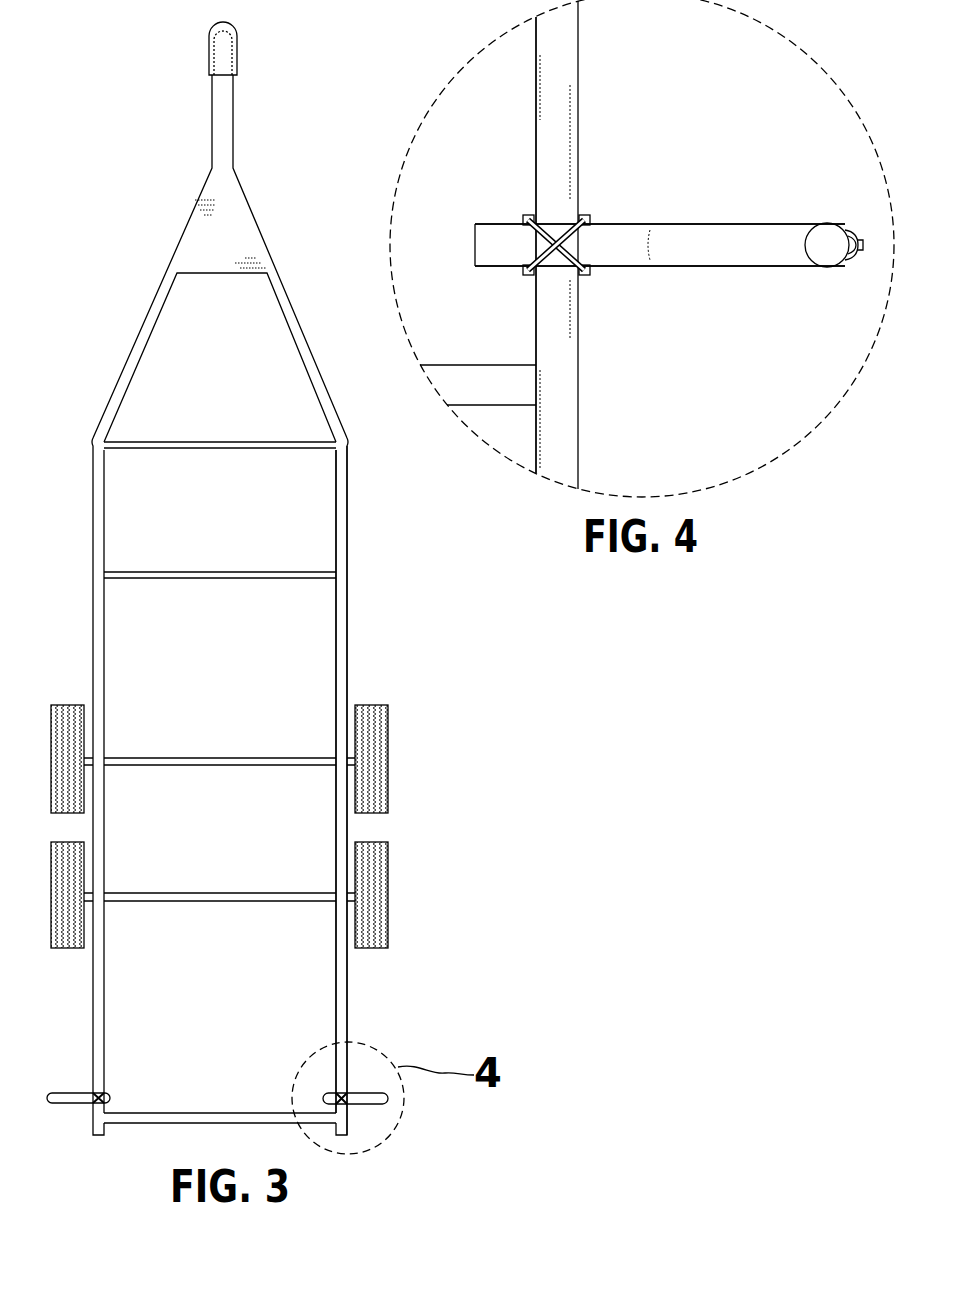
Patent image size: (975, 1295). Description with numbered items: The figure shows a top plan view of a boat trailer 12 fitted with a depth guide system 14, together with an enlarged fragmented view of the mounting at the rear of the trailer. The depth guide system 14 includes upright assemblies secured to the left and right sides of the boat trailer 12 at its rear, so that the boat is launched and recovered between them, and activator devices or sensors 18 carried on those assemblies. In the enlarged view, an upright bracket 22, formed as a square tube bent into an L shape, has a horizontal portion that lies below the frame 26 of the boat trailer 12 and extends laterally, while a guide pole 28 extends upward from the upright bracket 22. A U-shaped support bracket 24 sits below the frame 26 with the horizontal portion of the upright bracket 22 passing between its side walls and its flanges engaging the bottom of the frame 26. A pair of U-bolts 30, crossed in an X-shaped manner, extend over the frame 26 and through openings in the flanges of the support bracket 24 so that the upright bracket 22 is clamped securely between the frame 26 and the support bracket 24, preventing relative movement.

In FIG. 3, the boat trailer 12 is at (347, 618).
In FIG. 4, the boat trailer 12 is at (580, 46).
In FIG. 3, the depth guide system 14 is at (64, 1090).
In FIG. 4, the depth guide system 14 is at (713, 222).
In FIG. 4, the activator device or sensor 18 is at (868, 250).
In FIG. 4, the upright bracket 22 is at (655, 266).
In FIG. 4, the support bracket 24 is at (587, 215).
In FIG. 3, the frame 26 is at (340, 985).
In FIG. 4, the frame 26 is at (535, 315).
In FIG. 4, the guide pole 28 is at (826, 268).
In FIG. 4, the U-bolts 30 is at (545, 222).